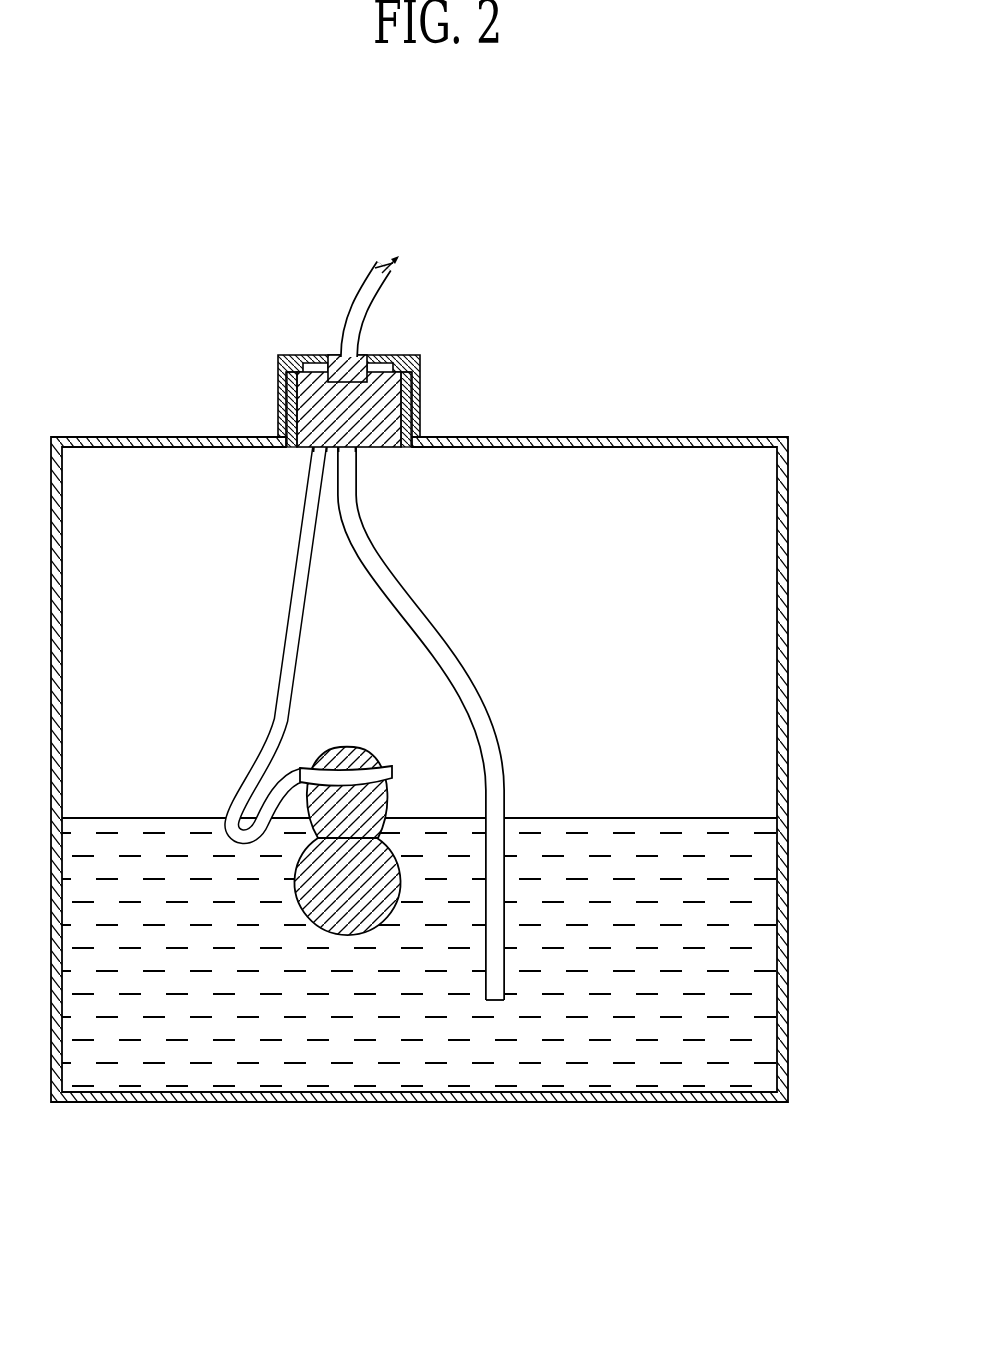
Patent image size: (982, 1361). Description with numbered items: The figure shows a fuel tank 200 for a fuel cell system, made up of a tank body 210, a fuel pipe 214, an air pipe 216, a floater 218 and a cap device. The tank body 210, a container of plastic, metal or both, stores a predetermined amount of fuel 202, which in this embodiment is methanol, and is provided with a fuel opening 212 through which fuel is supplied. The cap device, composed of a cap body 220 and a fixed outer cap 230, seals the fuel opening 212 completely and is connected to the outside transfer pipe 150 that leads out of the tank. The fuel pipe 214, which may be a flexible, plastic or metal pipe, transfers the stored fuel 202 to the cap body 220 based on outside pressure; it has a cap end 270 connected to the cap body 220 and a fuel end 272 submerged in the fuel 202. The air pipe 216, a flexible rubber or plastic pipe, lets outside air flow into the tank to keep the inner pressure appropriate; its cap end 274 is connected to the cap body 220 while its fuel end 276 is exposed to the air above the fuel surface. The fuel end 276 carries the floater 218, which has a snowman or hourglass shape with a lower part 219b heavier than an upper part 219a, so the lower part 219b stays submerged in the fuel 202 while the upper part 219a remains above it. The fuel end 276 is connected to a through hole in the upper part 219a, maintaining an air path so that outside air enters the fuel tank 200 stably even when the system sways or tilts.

The fuel tank 200 is at (482, 676).
The outside transfer pipe 150 is at (323, 301).
The fixed outer cap 230 is at (432, 347).
The fuel opening 212 is at (296, 396).
The cap body 220 is at (411, 406).
The cap end of the air pipe 274 is at (272, 482).
The cap end of the fuel pipe 270 is at (402, 482).
The fuel pipe 214 is at (435, 813).
The air pipe 216 is at (250, 637).
The tank body 210 is at (482, 769).
The floater 218 is at (429, 786).
The upper part of the floater 219a is at (369, 746).
The lower part of the floater 219b is at (379, 844).
The fuel end of the air pipe 276 is at (431, 732).
The fuel 202 is at (475, 952).
The fuel end of the fuel pipe 272 is at (508, 1091).